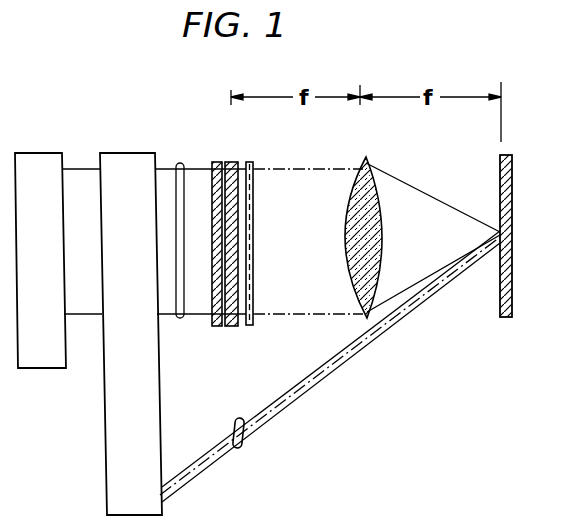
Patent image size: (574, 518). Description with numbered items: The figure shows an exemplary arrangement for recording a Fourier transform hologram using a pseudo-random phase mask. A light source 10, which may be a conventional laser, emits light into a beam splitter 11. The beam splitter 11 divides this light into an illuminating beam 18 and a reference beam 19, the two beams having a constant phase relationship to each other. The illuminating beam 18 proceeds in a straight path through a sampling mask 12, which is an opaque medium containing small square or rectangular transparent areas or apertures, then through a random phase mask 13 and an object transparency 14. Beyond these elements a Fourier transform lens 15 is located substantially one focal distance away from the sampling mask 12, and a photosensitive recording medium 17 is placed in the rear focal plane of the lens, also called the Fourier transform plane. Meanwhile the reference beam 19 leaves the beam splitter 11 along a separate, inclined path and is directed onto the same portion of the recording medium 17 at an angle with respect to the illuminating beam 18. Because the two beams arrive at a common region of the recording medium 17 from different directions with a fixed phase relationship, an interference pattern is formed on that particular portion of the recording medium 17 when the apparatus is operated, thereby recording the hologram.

The light source 10 is at (34, 152).
The beam splitter 11 is at (125, 152).
The sampling mask 12 is at (215, 161).
The random phase mask 13 is at (231, 161).
The object transparency 14 is at (250, 161).
The Fourier transform lens 15 is at (367, 157).
The photosensitive recording medium 17 is at (513, 165).
The illuminating beam 18 is at (181, 319).
The reference beam 19 is at (239, 449).